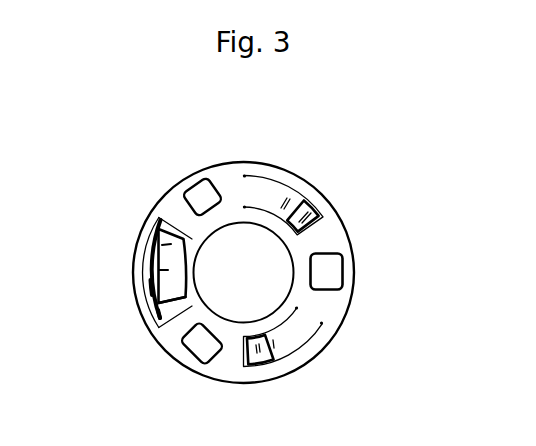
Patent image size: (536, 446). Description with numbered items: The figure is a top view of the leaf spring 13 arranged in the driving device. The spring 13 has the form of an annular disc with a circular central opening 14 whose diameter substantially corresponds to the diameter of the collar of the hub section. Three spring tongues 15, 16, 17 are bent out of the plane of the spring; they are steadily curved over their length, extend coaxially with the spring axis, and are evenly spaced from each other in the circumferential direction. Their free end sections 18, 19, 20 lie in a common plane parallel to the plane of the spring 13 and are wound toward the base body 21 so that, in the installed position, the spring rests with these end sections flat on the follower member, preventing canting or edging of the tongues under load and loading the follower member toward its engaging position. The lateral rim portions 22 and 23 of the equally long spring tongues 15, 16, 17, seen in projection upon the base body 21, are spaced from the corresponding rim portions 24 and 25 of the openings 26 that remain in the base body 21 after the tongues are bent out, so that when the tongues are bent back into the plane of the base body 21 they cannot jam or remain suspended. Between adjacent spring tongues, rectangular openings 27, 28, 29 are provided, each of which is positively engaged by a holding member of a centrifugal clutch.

The spring 13 is at (166, 188).
The circular central opening 14 is at (244, 233).
The spring tongue 15 is at (165, 255).
The spring tongue 16 is at (273, 193).
The spring tongue 17 is at (281, 342).
The free end section 18 is at (156, 233).
The free end section 19 is at (313, 217).
The free end section 20 is at (256, 357).
The base body 21 is at (170, 203).
The lateral rim portion 22 is at (150, 280).
The lateral rim portion 23 is at (157, 314).
The rim portion 24 is at (149, 293).
The rim portion 25 is at (177, 298).
The opening 26 is at (170, 222).
The rectangular opening 27 is at (208, 188).
The rectangular opening 28 is at (327, 266).
The rectangular opening 29 is at (204, 352).